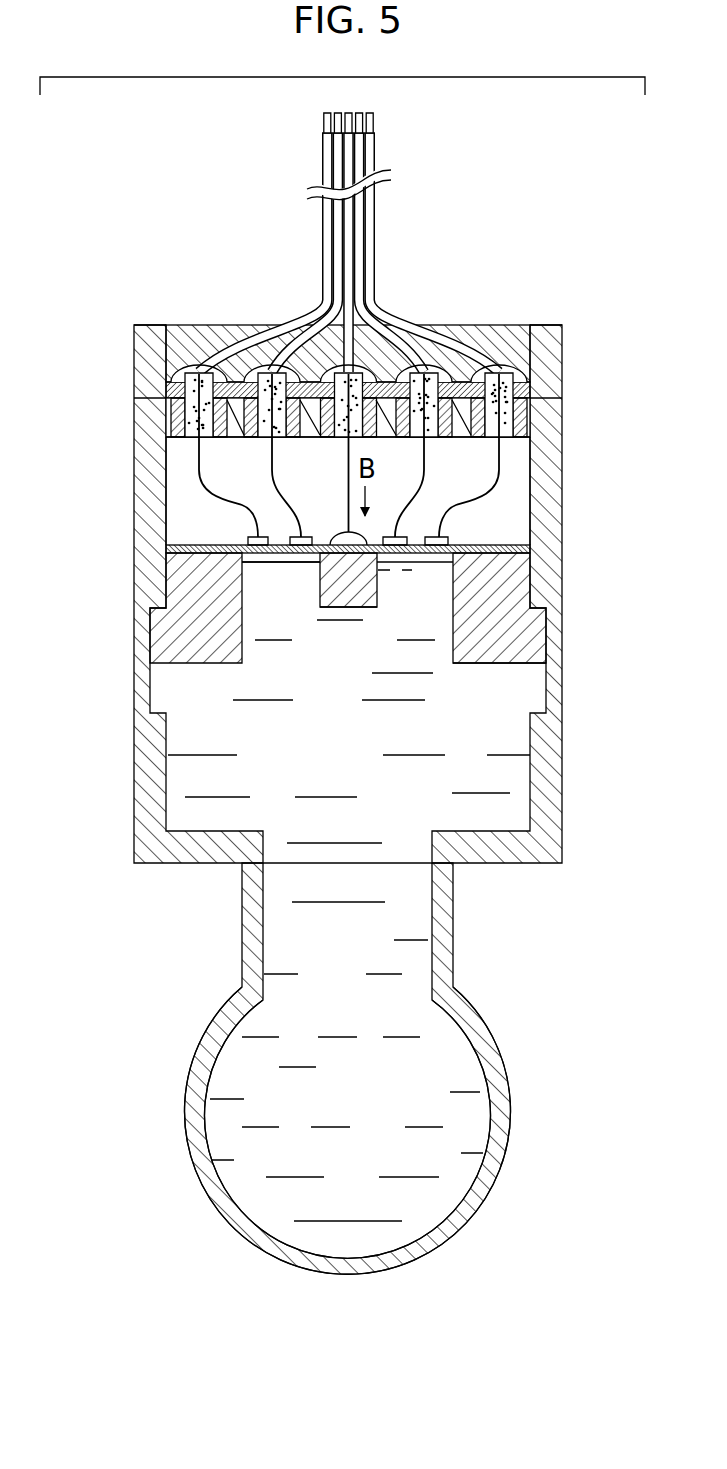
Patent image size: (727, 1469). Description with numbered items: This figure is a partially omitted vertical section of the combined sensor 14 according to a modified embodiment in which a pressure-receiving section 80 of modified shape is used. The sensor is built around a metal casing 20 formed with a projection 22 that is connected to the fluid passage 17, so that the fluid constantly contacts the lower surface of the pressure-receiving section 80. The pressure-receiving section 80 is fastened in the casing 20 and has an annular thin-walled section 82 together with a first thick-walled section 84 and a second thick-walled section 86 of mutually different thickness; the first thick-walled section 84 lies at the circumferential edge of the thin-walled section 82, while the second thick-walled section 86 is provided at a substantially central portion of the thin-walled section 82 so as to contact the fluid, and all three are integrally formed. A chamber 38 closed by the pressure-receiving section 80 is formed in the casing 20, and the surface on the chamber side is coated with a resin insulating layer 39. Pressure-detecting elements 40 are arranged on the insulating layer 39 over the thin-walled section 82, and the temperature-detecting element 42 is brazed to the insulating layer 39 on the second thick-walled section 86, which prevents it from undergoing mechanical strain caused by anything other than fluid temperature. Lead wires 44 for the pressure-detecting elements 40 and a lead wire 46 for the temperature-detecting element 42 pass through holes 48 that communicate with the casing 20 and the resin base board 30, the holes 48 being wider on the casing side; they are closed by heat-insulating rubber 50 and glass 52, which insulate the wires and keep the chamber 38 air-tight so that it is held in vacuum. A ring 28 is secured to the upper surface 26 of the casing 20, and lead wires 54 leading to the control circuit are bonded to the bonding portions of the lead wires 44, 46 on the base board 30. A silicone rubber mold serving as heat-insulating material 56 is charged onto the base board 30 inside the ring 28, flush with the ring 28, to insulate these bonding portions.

The combined sensor 14 is at (163, 250).
The fluid passage 17 is at (405, 1076).
The casing 20 is at (553, 551).
The projection 22 is at (452, 937).
The upper surface 26 is at (152, 397).
The ring 28 is at (553, 383).
The base board 30 is at (162, 381).
The chamber 38 is at (182, 509).
The insulating layer 39 is at (172, 546).
The pressure-detecting elements 40 is at (258, 547).
The temperature-detecting element 42 is at (338, 531).
The lead wires 44 is at (248, 510).
The lead wire 46 is at (343, 475).
The holes 48 is at (175, 440).
The heat-insulating rubber 50 is at (269, 372).
The glass 52 is at (228, 332).
The lead wires 54 is at (336, 231).
The heat-insulating material 56 is at (530, 362).
The pressure-receiving section 80 is at (378, 637).
The thin-walled section 82 is at (280, 563).
The first thick-walled section 84 is at (485, 659).
The second thick-walled section 86 is at (328, 600).